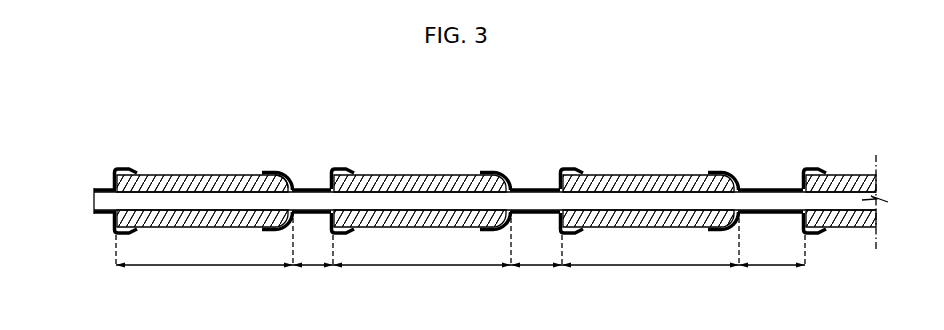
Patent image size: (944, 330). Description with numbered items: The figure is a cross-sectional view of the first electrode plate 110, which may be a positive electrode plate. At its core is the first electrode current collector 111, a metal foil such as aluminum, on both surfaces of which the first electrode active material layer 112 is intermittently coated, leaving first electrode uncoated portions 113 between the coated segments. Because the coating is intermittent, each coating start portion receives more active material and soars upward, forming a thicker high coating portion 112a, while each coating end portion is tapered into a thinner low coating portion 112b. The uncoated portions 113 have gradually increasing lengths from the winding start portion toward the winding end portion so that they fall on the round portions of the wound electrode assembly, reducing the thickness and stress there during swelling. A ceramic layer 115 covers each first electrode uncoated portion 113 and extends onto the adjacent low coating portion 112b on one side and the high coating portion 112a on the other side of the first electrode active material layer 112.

The first electrode plate 110 is at (77, 97).
The first electrode current collector 111 is at (102, 202).
The first electrode active material layer 112 is at (188, 176).
The high coating portion 112a is at (117, 168).
The low coating portion 112b is at (273, 175).
The first electrode uncoated portion 113 is at (317, 192).
The ceramic layer 115 is at (276, 171).